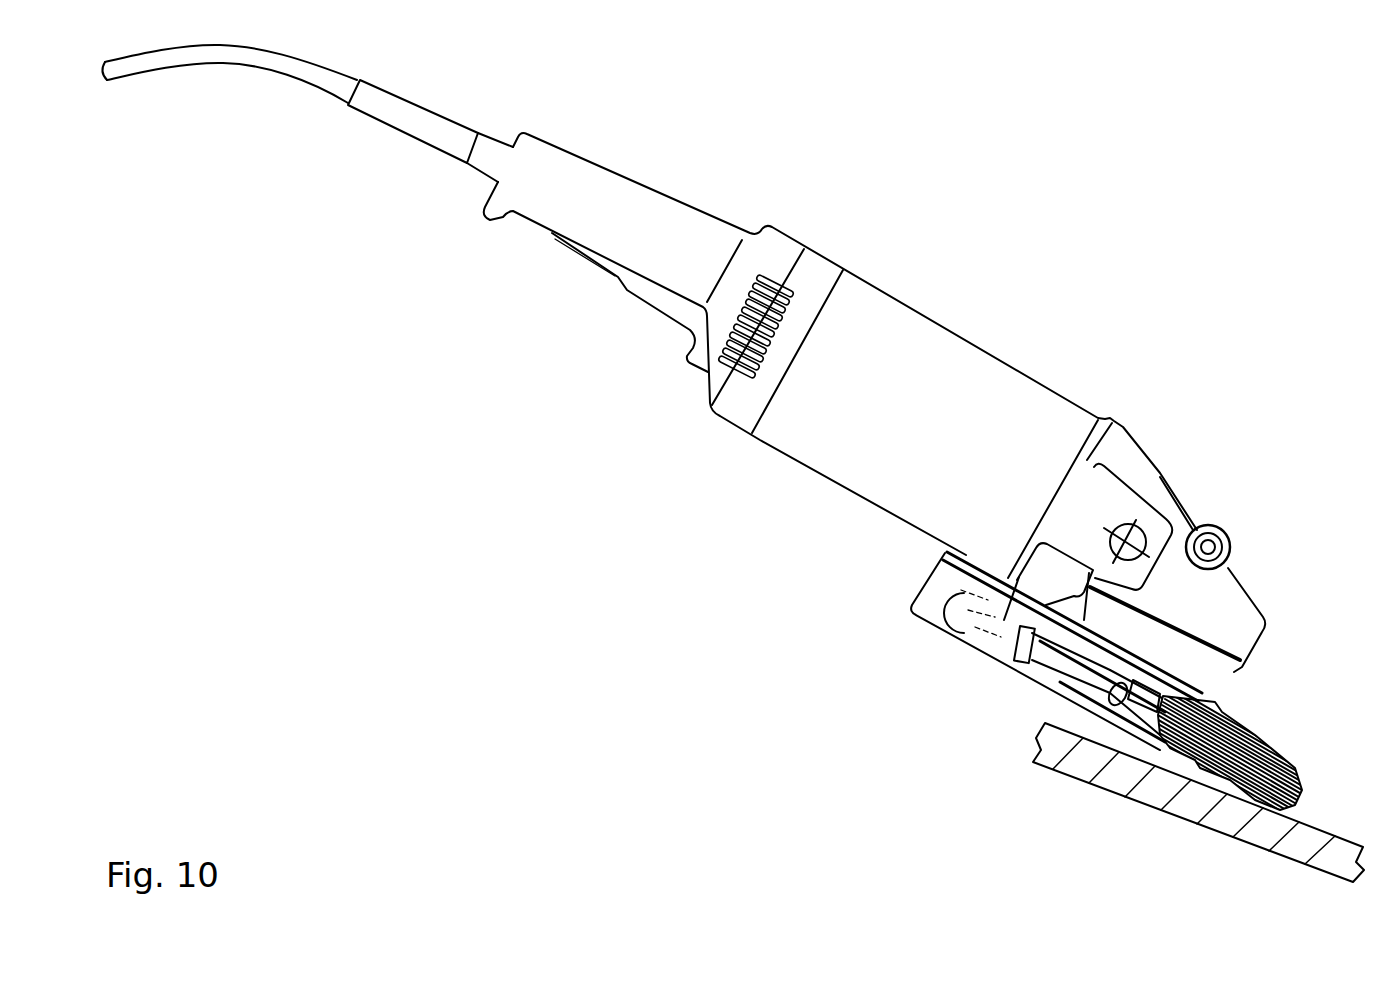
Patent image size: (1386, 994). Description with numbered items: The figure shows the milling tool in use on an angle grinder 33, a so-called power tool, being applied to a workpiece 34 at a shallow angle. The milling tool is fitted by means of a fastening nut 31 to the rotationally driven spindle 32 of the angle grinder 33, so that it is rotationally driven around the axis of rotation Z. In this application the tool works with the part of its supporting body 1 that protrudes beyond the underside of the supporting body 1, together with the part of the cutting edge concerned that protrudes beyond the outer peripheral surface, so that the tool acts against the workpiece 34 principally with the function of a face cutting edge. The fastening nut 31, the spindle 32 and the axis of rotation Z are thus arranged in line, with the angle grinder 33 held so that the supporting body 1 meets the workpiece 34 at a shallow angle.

The angle grinder 33 is at (960, 338).
The spindle 32 is at (1215, 676).
The fastening nut 31 is at (1100, 738).
The workpiece 34 is at (1201, 812).
The supporting body 1 is at (1250, 738).
The axis of rotation Z is at (1183, 590).